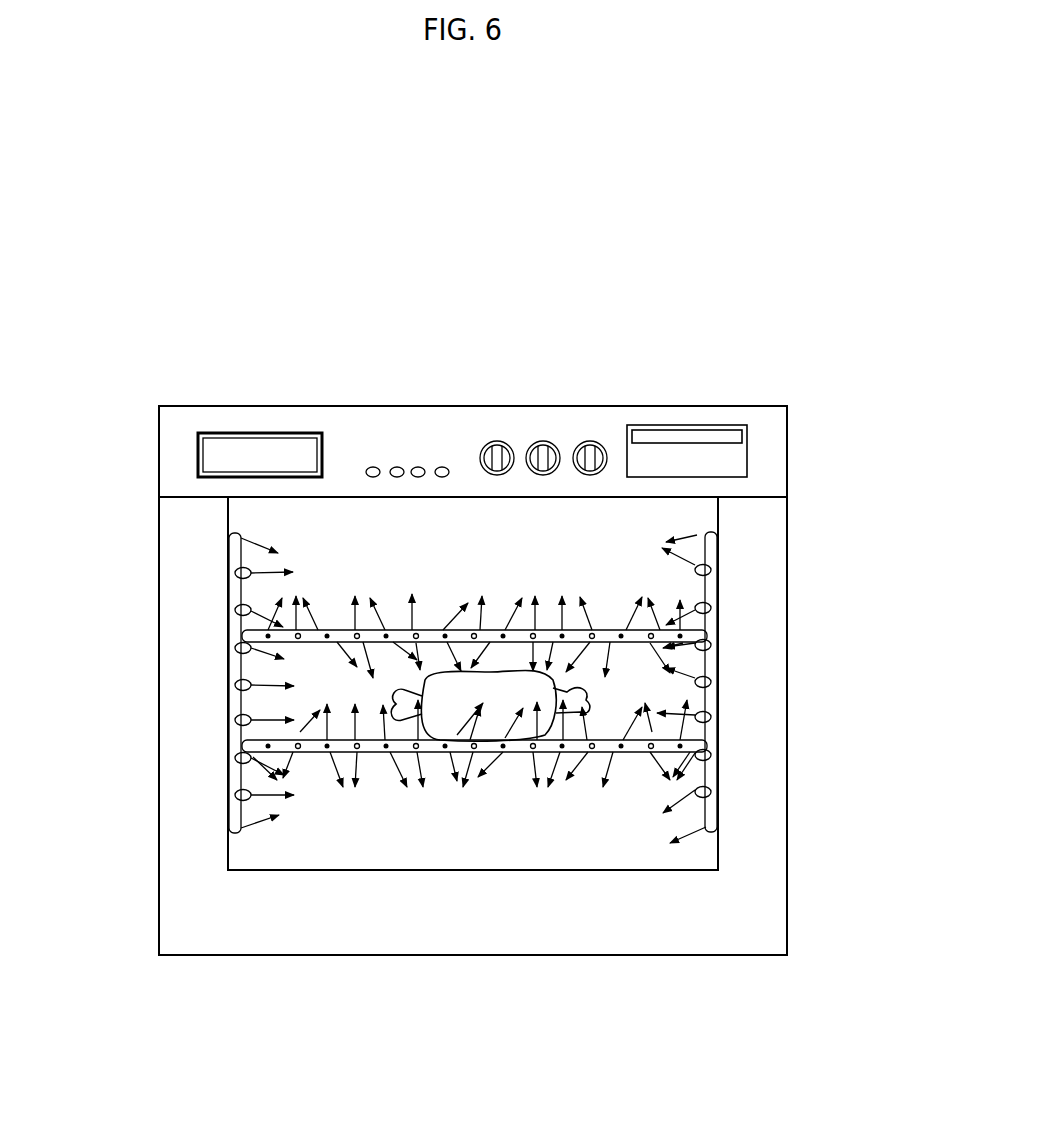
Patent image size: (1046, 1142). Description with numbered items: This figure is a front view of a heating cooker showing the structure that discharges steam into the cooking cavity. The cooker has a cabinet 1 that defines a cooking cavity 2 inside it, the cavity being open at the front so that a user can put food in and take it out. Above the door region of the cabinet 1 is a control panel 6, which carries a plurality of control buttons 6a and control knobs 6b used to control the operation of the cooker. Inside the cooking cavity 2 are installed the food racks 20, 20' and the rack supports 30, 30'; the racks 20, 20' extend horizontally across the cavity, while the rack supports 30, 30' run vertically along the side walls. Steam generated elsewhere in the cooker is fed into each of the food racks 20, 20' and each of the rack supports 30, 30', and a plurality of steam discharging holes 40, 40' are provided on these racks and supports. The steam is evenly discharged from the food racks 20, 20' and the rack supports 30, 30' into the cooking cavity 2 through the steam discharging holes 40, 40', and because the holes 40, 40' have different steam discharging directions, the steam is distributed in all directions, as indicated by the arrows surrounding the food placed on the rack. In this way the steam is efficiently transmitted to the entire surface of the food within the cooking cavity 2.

The cabinet 1 is at (660, 302).
The cooking cavity 2 is at (473, 683).
The control panel 6 is at (353, 418).
The control buttons 6a is at (396, 467).
The control knobs 6b is at (498, 442).
The steam discharging holes 40 is at (561, 627).
The steam discharging holes 40' is at (561, 627).
The food rack 20 is at (379, 717).
The food rack 20' is at (379, 717).
The rack support 30 is at (384, 687).
The rack support 30' is at (384, 687).